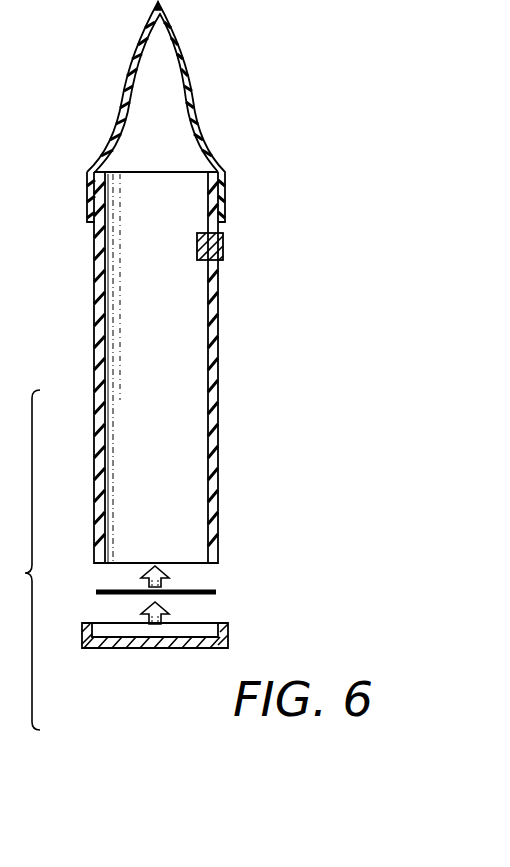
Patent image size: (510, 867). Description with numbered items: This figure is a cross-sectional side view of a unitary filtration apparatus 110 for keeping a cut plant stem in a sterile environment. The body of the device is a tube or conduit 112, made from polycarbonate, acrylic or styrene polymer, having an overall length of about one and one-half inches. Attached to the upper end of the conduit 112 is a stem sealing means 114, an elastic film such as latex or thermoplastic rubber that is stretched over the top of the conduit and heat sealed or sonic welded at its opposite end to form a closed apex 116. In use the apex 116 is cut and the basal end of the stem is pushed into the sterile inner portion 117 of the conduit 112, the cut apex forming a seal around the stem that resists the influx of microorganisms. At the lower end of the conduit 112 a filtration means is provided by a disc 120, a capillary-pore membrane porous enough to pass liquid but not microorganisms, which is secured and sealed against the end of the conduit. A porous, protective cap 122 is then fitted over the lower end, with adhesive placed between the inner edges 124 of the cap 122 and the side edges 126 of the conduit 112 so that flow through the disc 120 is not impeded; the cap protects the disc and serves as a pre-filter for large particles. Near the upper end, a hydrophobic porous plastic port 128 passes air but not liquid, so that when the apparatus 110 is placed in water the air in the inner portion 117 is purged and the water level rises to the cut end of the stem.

The unitary filtration apparatus 110 is at (262, 206).
The tube or conduit 112 is at (214, 400).
The stem sealing means 114 is at (188, 102).
The closed apex 116 is at (158, 18).
The inner portion 117 is at (162, 355).
The disc 120 is at (216, 592).
The porous protective cap 122 is at (123, 648).
The inner edges of the cap 124 is at (220, 632).
The side edges of the conduit 126 is at (217, 554).
The hydrophobic porous plastic port 128 is at (223, 250).